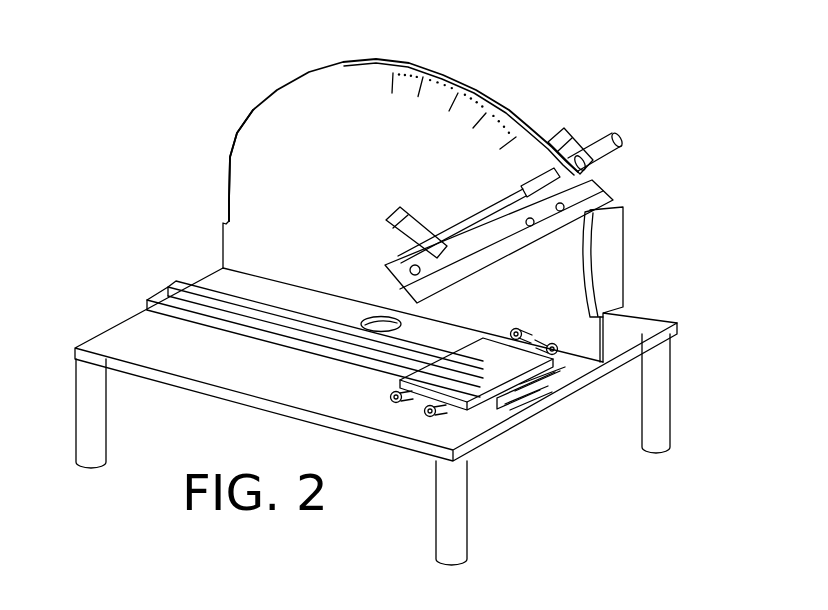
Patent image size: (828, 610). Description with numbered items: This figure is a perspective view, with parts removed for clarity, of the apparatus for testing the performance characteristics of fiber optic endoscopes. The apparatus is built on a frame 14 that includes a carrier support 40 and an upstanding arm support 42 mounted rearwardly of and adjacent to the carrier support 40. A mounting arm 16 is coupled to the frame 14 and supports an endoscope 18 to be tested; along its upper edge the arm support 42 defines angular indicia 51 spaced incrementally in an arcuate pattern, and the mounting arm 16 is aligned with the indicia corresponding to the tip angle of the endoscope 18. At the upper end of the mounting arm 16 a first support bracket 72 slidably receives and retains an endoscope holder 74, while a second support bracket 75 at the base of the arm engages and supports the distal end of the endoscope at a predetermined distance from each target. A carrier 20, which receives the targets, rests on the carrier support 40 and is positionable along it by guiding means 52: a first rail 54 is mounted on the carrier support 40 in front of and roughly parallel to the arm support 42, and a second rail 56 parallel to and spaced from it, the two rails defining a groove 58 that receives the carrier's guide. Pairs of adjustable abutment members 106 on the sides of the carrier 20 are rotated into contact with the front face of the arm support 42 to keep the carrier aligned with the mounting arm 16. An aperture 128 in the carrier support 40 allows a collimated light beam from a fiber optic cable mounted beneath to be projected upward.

The frame 14 is at (264, 82).
The mounting arm 16 is at (503, 260).
The endoscope 18 is at (604, 147).
The carrier 20 is at (440, 378).
The carrier support 40 is at (95, 345).
The arm support 42 is at (254, 163).
The angular indicia 51 is at (390, 86).
The means for guiding the carrier 52 is at (158, 268).
The first rail 54 is at (182, 290).
The second rail 56 is at (160, 300).
The groove 58 is at (548, 392).
The first support bracket 72 is at (563, 138).
The endoscope holder 74 is at (612, 197).
The second support bracket 75 is at (450, 217).
The adjustable abutment members 106 is at (430, 417).
The aperture 128 is at (364, 322).